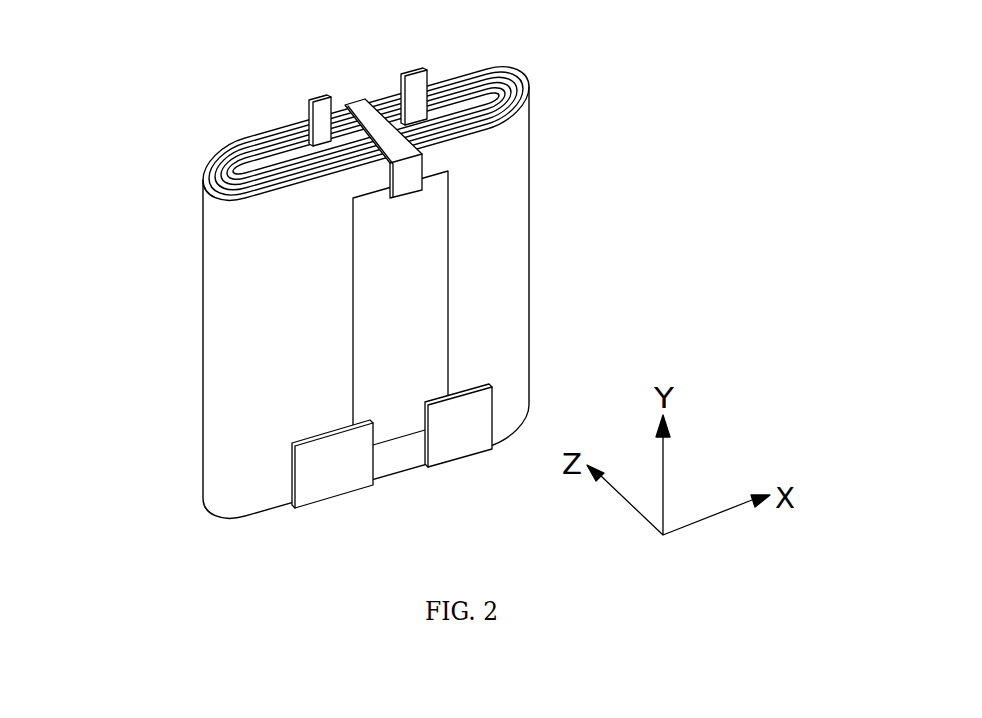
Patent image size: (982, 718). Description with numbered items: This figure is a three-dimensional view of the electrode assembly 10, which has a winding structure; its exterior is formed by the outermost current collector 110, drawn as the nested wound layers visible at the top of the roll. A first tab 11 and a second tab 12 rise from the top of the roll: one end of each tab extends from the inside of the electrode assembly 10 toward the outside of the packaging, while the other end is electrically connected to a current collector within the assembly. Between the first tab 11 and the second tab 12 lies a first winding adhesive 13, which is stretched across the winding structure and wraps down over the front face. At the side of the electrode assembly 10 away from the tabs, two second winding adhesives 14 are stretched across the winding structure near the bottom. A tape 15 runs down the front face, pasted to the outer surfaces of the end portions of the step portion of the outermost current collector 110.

The electrode assembly 10 is at (375, 289).
The outermost current collector 110 is at (528, 98).
The first tab 11 is at (318, 101).
The second tab 12 is at (413, 74).
The first winding adhesive 13 is at (407, 166).
The second winding adhesive 14 is at (345, 452).
The tape 15 is at (410, 280).